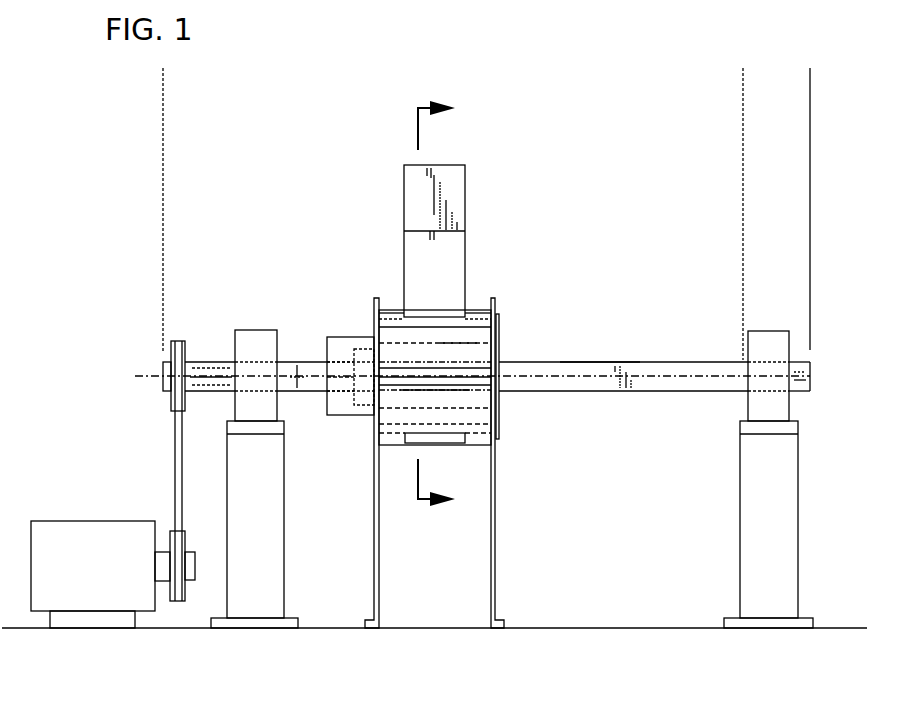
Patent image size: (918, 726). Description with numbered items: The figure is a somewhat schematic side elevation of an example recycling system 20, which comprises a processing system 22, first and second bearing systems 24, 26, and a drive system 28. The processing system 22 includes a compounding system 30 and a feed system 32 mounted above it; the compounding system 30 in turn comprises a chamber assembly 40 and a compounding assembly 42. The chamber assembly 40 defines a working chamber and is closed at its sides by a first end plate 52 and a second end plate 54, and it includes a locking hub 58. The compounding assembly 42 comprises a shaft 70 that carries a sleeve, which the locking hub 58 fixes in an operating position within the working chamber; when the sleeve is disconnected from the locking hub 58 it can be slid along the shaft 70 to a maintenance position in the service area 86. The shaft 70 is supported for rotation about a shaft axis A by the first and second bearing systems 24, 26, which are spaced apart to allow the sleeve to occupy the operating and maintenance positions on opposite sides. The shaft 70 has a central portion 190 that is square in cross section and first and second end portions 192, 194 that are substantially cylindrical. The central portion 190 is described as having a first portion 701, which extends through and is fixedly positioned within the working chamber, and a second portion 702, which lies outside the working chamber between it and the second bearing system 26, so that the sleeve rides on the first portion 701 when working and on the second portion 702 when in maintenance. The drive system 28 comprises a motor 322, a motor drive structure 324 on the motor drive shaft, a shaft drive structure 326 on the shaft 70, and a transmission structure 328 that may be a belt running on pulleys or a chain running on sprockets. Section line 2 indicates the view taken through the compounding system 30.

The section line for FIG. 2 is at (445, 305).
The recycling system 20 is at (116, 302).
The processing system 22 is at (513, 211).
The first bearing system 24 is at (254, 313).
The second bearing system 26 is at (763, 319).
The drive system 28 is at (96, 466).
The compounding system 30 is at (368, 306).
The feed system 32 is at (394, 192).
The chamber assembly 40 is at (499, 313).
The compounding assembly 42 is at (460, 352).
The first end plate 52 is at (374, 516).
The second end plate 54 is at (497, 516).
The locking hub 58 is at (345, 337).
The shaft 70 is at (634, 372).
The first portion 701 is at (436, 390).
The second portion 702 is at (573, 372).
The service area 86 is at (743, 257).
The central portion 190 is at (743, 76).
The first end portion 192 is at (280, 76).
The second end portion 194 is at (743, 76).
The motor 322 is at (90, 535).
The motor drive structure 324 is at (187, 590).
The shaft drive structure 326 is at (171, 406).
The transmission structure 328 is at (177, 437).
The shaft axis A is at (143, 375).